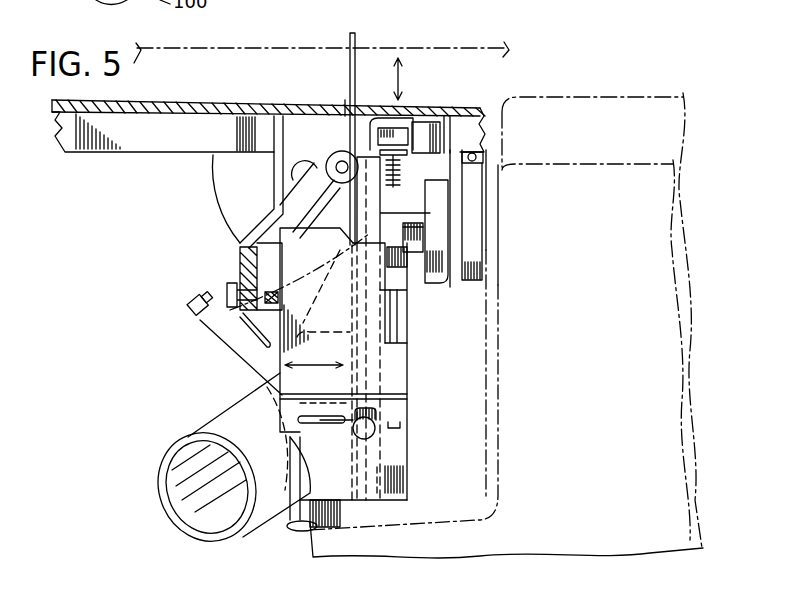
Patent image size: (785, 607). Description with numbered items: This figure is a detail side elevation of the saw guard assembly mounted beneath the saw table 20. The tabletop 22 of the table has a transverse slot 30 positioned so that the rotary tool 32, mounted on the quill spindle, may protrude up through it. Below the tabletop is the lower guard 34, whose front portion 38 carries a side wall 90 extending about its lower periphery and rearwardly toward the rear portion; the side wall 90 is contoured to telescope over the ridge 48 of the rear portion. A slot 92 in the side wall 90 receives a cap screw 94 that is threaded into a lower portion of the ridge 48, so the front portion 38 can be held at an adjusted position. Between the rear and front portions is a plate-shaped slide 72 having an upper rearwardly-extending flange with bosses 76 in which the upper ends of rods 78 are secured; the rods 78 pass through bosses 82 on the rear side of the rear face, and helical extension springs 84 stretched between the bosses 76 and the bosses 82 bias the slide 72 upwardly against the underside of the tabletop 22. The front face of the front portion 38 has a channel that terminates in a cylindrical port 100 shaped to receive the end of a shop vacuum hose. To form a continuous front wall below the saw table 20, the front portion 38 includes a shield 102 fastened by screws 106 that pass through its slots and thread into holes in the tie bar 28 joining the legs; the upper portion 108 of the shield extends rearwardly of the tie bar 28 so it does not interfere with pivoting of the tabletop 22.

The saw table 20 is at (153, 141).
The tabletop 22 is at (413, 110).
The tie bar 28 is at (267, 270).
The transverse slot 30 is at (345, 107).
The rotary tool 32 is at (354, 33).
The lower guard 34 is at (419, 400).
The front portion 38 is at (290, 350).
The ridge 48 is at (336, 410).
The slide 72 is at (355, 150).
The bosses 76 is at (400, 138).
The rods 78 is at (397, 328).
The bosses 82 is at (400, 287).
The helical extension springs 84 is at (412, 153).
The side wall 90 is at (320, 256).
The slot 92 is at (333, 423).
The cap screw 94 is at (376, 429).
The cylindrical port 100 is at (207, 420).
The shield 102 is at (240, 255).
The screws 106 is at (226, 285).
The upper portion 108 is at (285, 170).